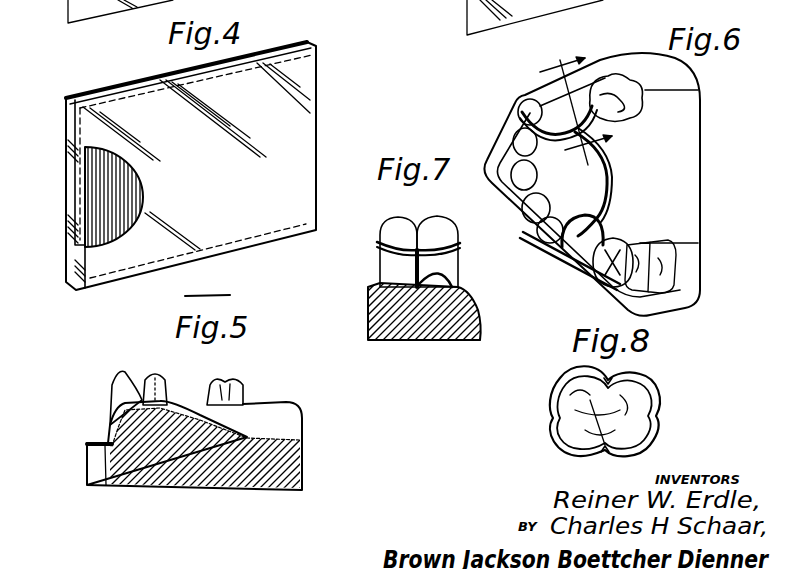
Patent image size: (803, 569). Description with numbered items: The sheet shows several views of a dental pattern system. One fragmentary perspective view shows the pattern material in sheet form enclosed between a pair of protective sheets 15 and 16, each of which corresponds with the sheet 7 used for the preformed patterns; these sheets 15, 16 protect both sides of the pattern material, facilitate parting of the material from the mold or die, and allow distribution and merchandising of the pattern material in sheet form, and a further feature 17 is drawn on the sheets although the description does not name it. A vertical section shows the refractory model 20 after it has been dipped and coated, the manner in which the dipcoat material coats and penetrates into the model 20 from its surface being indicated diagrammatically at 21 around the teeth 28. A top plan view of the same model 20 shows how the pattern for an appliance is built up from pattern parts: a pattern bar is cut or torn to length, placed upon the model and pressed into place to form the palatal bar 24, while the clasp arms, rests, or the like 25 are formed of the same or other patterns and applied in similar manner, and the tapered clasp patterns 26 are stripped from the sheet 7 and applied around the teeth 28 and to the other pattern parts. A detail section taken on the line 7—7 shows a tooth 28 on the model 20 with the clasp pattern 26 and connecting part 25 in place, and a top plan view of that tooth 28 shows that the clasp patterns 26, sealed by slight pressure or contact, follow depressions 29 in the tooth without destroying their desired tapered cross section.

In FIG. 6, the sheet 7 is at (576, 103).
In FIG. 4, the sheet 15 is at (66, 100).
In FIG. 4, the sheet 16 is at (92, 133).
In FIG. 4, the semicircular opening 17 is at (97, 203).
In FIG. 5, the refractory model 20 is at (167, 477).
In FIG. 7, the refractory model 20 is at (408, 340).
In FIG. 6, the refractory model 20 is at (690, 165).
In FIG. 5, the dipcoat penetration 21 is at (120, 425).
In FIG. 6, the palatal bar 24 is at (610, 175).
In FIG. 7, the clasp arms, rests, or the like 25 is at (416, 272).
In FIG. 6, the clasp arms, rests, or the like 25 is at (588, 131).
In FIG. 7, the clasp pattern 26 is at (380, 245).
In FIG. 6, the clasp pattern 26 is at (638, 100).
In FIG. 8, the clasp pattern 26 is at (657, 393).
In FIG. 5, the tooth 28 is at (142, 400).
In FIG. 7, the tooth 28 is at (434, 228).
In FIG. 6, the tooth 28 is at (598, 78).
In FIG. 8, the tooth 28 is at (557, 428).
In FIG. 8, the depression 29 is at (615, 377).